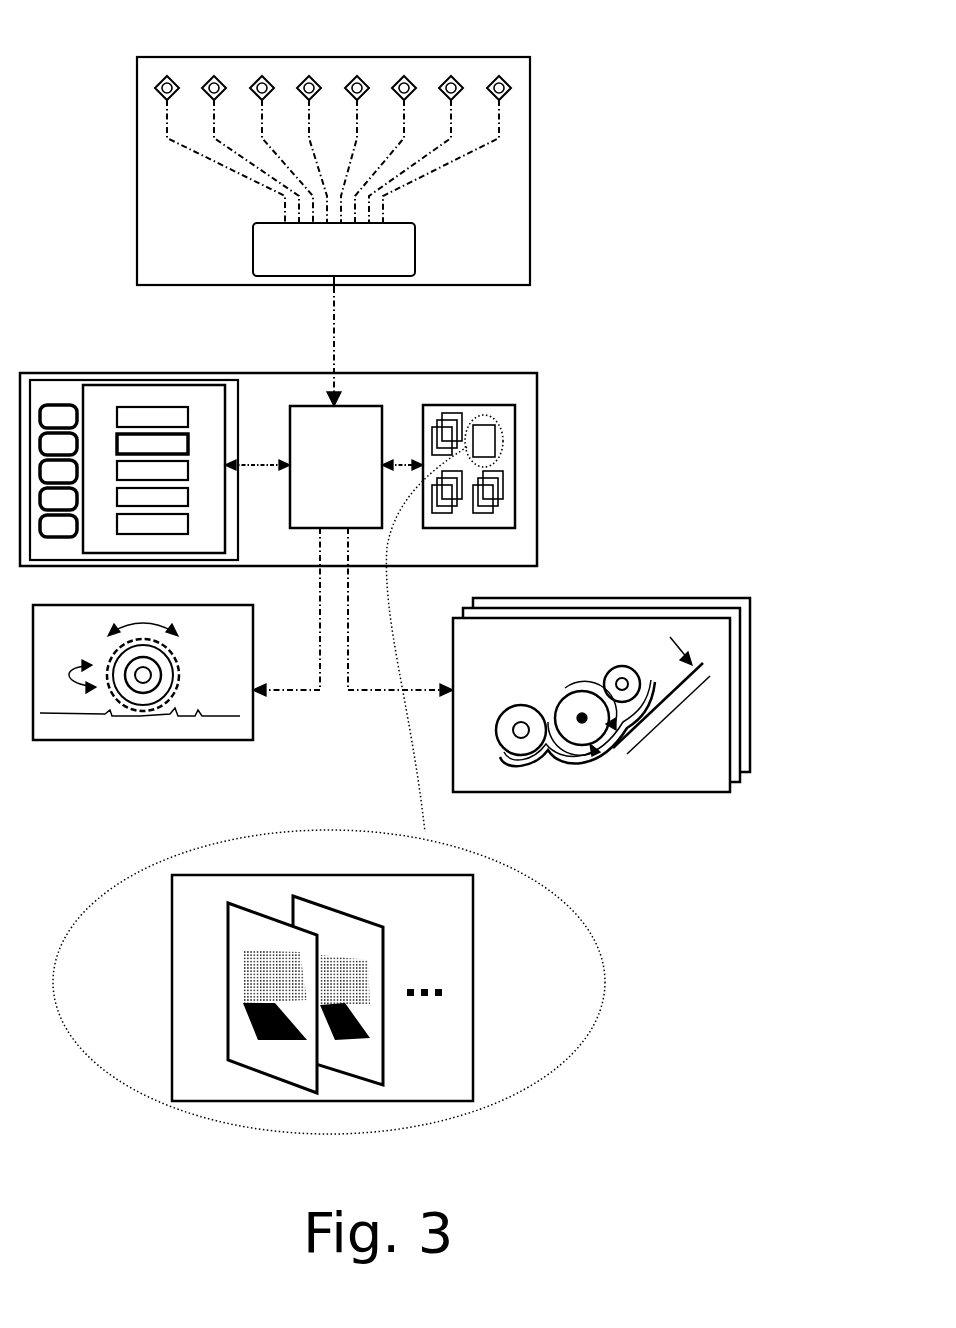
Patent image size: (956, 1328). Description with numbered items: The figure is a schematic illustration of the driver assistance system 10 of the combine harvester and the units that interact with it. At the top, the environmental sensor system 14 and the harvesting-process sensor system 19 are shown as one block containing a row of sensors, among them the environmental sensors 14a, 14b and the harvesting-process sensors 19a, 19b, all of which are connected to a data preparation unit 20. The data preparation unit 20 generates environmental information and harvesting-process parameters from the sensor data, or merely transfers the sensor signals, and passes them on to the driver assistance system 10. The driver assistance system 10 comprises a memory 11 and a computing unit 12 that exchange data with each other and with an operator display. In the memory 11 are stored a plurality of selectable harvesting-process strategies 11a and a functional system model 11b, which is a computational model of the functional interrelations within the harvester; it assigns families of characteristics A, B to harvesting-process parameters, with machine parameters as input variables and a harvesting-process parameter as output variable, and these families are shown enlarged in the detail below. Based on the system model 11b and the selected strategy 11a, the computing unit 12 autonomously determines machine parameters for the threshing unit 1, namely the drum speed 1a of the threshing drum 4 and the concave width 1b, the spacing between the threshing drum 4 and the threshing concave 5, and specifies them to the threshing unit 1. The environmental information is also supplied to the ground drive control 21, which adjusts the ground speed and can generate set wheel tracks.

The threshing unit 1 is at (601, 731).
The drum speed 1a is at (540, 682).
The concave width 1b is at (710, 690).
The threshing drum 4 is at (593, 708).
The threshing concave 5 is at (593, 767).
The driver assistance system 10 is at (344, 429).
The memory 11 is at (545, 417).
The harvesting-process strategies 11a is at (487, 496).
The functional system model 11b is at (483, 445).
The computing unit 12 is at (318, 484).
The environmental sensor system 14 is at (382, 143).
The environmental sensor 14a is at (157, 82).
The environmental sensor 14b is at (205, 80).
The harvesting-process sensor system 19 is at (345, 143).
The harvesting-process sensor 19a is at (458, 80).
The harvesting-process sensor 19b is at (507, 80).
The data preparation unit 20 is at (318, 273).
The ground drive control 21 is at (70, 741).
The family of characteristics A is at (273, 1003).
The family of characteristics B is at (338, 988).